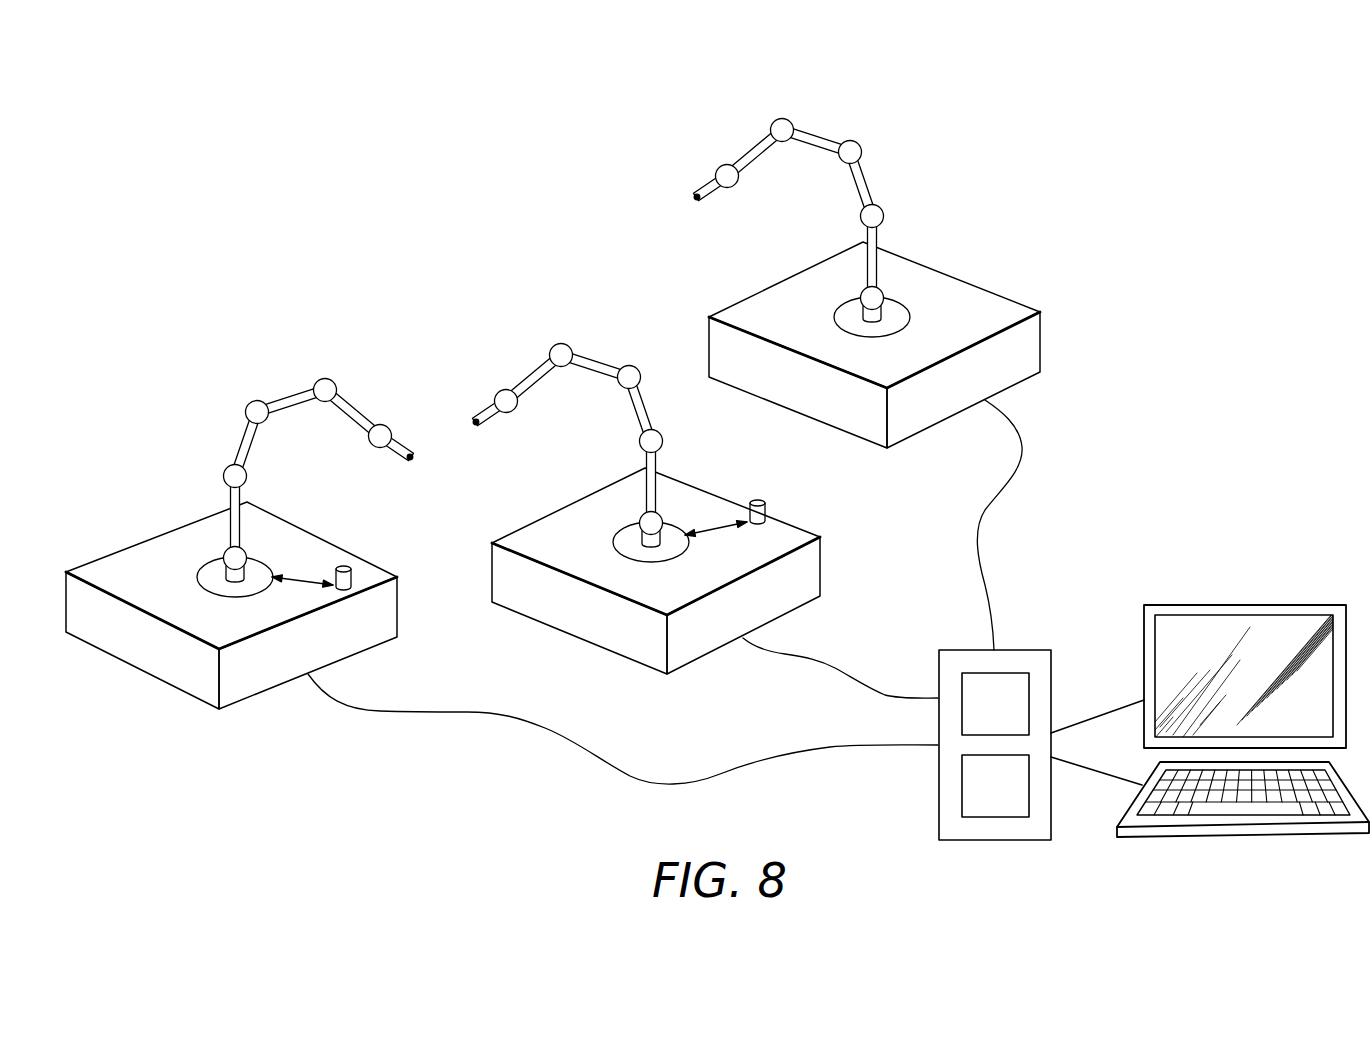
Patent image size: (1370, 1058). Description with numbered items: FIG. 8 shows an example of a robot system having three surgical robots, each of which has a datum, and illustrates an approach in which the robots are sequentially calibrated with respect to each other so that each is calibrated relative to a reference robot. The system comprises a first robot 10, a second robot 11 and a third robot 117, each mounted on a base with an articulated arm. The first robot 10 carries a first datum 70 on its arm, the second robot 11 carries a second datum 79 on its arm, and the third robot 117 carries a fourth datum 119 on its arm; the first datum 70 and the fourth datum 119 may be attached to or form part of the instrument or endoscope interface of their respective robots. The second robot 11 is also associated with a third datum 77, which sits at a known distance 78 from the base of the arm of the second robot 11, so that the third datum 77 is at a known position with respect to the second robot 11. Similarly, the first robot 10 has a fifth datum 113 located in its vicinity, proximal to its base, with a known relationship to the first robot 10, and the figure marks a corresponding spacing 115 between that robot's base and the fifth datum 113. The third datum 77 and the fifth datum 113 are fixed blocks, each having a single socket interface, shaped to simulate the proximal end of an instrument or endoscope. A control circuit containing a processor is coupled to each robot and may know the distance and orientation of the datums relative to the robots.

The second robot 11 is at (171, 409).
The first robot 10 is at (519, 322).
The third robot 117 is at (833, 99).
The first datum 70 is at (480, 420).
The second datum 79 is at (413, 459).
The fourth datum 119 is at (696, 194).
The third datum 77 is at (340, 567).
The distance 78 is at (303, 573).
The fifth datum 113 is at (768, 510).
The distance between arm base and target object 115 is at (715, 523).